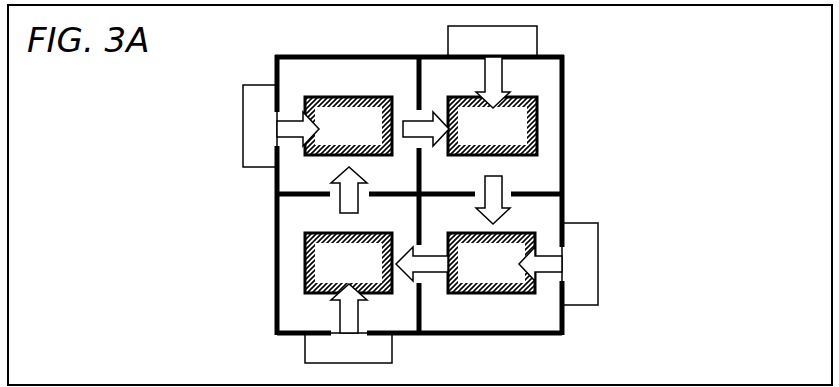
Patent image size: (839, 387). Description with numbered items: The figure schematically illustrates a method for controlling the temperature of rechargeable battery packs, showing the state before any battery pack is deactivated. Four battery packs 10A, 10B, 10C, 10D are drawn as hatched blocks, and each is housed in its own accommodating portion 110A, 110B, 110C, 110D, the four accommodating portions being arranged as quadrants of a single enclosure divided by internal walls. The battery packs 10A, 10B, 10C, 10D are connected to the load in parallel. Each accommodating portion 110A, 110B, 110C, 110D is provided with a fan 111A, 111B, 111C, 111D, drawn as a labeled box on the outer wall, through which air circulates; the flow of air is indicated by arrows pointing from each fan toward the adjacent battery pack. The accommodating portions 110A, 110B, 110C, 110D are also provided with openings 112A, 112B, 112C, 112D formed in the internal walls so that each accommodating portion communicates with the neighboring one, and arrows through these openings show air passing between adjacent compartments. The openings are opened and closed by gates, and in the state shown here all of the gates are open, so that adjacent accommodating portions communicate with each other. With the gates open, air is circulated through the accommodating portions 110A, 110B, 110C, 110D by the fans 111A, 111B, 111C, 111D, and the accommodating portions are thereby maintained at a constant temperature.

The battery pack 10A is at (348, 126).
The battery pack 10B is at (492, 126).
The battery pack 10C is at (491, 263).
The battery pack 10D is at (348, 263).
The accommodating portion 110A is at (305, 92).
The accommodating portion 110B is at (551, 126).
The accommodating portion 110C is at (531, 304).
The accommodating portion 110D is at (281, 265).
The fan 111A is at (243, 130).
The fan 111B is at (537, 35).
The fan 111C is at (598, 263).
The fan 111D is at (305, 348).
The opening 112A is at (412, 115).
The opening 112B is at (510, 190).
The opening 112C is at (423, 273).
The opening 112D is at (332, 190).